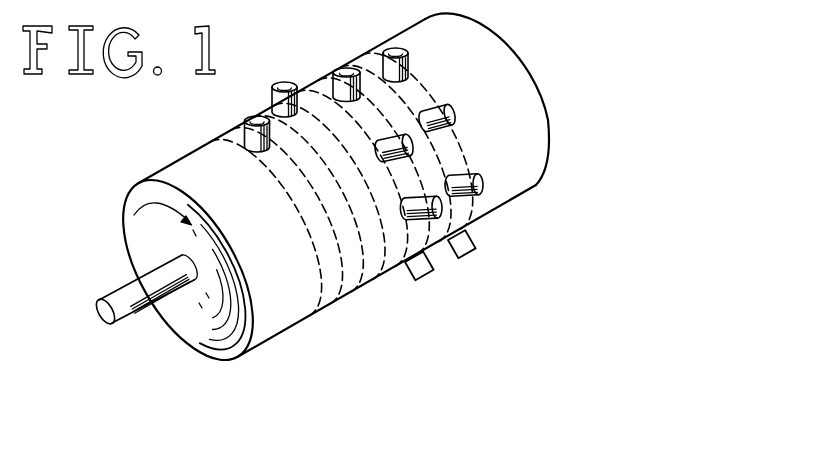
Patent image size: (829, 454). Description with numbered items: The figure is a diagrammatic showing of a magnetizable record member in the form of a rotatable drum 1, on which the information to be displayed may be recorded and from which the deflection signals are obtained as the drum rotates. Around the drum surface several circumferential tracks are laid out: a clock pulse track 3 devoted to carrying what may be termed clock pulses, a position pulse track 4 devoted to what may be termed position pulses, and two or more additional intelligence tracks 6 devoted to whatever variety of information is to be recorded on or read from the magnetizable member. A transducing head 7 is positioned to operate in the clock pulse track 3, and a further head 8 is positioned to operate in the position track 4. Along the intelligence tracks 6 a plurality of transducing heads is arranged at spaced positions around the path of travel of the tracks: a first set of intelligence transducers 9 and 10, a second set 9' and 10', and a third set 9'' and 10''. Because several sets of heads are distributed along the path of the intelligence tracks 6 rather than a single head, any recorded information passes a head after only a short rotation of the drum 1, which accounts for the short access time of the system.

The rotatable drum 1 is at (546, 121).
The clock pulse track 3 is at (231, 142).
The position pulse track 4 is at (361, 266).
The intelligence tracks 6 is at (411, 97).
The transducing head 7 is at (253, 114).
The transducing head 8 is at (278, 64).
The intelligence transducer 9 is at (340, 77).
The intelligence transducer 10 is at (387, 52).
The intelligence transducer 9' is at (393, 163).
The intelligence transducer 10' is at (454, 121).
The intelligence transducer 9'' is at (412, 211).
The intelligence transducer 10'' is at (477, 182).